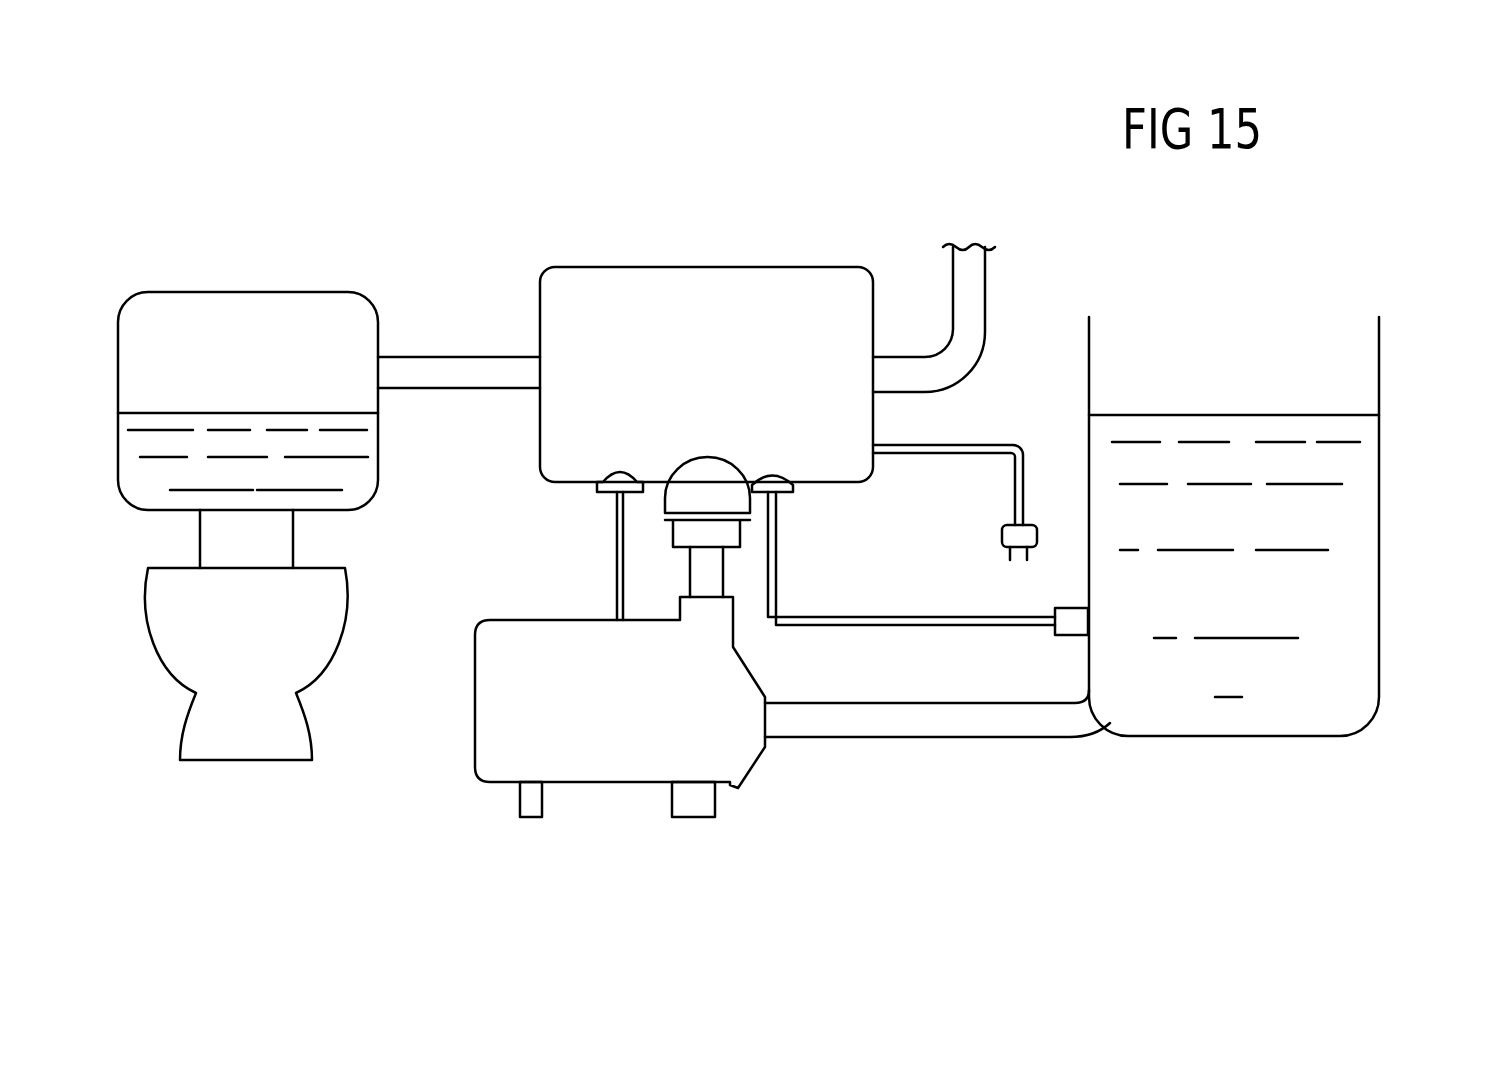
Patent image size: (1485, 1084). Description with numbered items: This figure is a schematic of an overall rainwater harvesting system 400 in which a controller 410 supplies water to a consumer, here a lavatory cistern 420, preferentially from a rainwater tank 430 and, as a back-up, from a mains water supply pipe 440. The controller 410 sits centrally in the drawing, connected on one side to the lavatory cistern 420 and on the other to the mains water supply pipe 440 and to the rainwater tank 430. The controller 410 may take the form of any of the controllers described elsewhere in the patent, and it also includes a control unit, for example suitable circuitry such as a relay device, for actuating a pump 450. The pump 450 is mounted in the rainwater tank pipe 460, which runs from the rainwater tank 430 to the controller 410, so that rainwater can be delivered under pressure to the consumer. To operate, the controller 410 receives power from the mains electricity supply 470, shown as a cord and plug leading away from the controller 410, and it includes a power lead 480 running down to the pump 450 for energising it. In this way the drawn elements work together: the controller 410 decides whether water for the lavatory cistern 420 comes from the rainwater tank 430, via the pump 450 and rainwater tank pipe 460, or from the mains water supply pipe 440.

The rainwater harvesting system 400 is at (393, 153).
The controller 410 is at (635, 297).
The lavatory cistern 420 is at (243, 313).
The rainwater tank 430 is at (1380, 577).
The mains water supply pipe 440 is at (975, 285).
The pump 450 is at (517, 733).
The rainwater tank pipe 460 is at (1003, 720).
The mains electricity supply 470 is at (1020, 486).
The power lead 480 is at (617, 560).